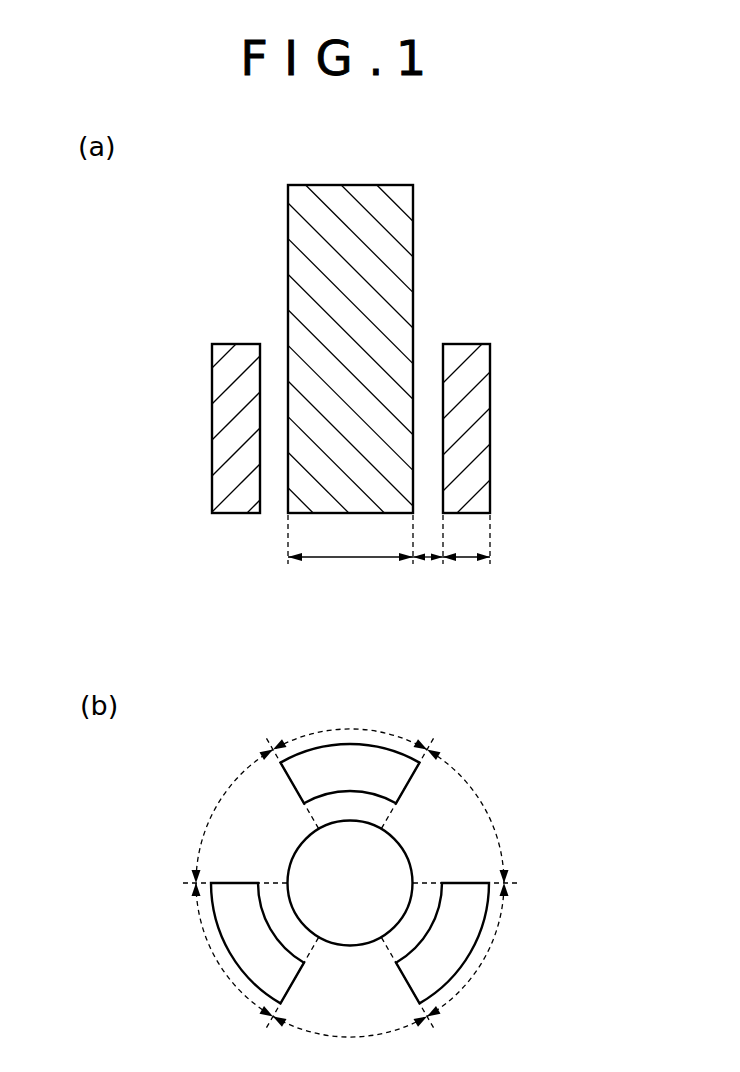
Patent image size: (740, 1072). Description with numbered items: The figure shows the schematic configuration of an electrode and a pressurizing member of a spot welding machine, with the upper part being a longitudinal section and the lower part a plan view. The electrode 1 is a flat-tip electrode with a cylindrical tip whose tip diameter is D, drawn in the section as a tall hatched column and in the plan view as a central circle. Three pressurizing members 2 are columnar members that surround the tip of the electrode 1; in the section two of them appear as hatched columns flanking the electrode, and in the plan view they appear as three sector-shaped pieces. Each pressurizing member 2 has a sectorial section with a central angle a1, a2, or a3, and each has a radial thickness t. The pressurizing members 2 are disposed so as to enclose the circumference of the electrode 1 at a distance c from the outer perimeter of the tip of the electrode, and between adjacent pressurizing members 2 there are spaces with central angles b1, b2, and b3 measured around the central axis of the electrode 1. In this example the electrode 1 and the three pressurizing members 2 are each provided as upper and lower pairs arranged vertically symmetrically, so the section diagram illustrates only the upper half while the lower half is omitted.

The electrode 1 is at (413, 247).
The pressurizing member 2 is at (490, 412).
The tip diameter D is at (350, 552).
The distance c is at (428, 572).
The thickness t is at (466, 552).
The central angle a1 is at (471, 949).
The central angle a2 is at (227, 949).
The central angle a3 is at (350, 725).
The central angle of space b1 is at (473, 816).
The central angle of space b2 is at (350, 1043).
The central angle of space b3 is at (227, 816).